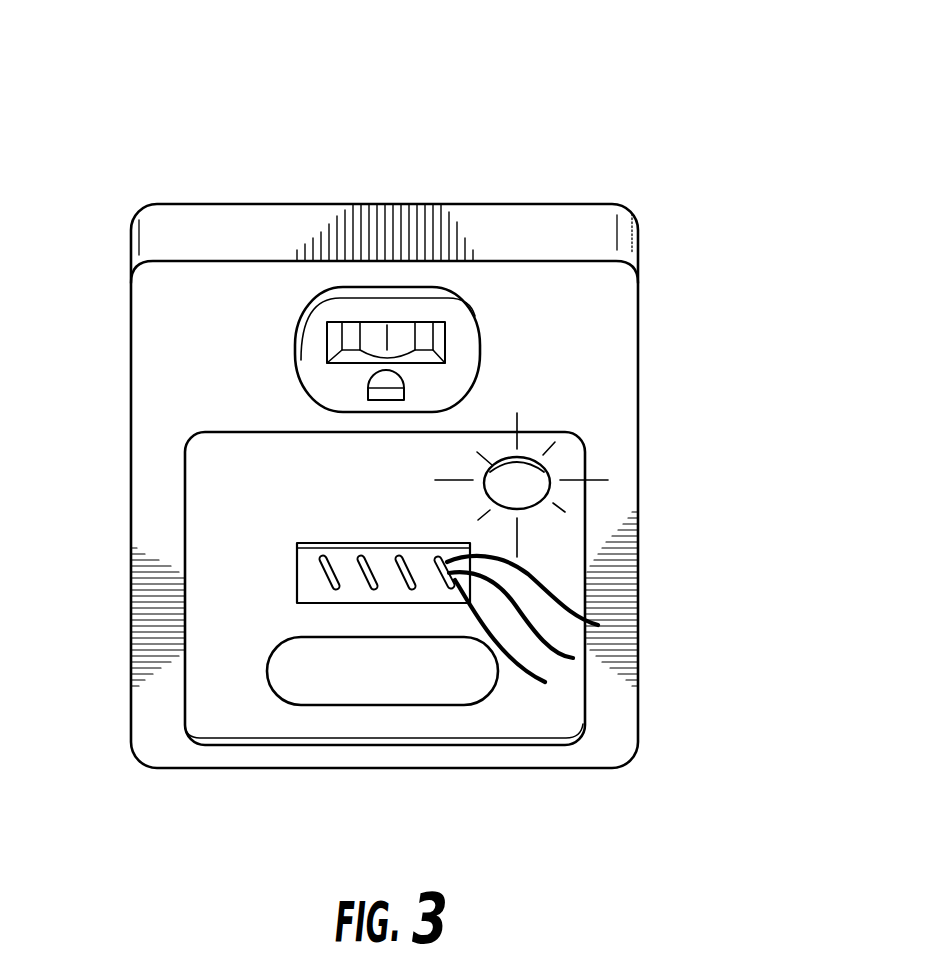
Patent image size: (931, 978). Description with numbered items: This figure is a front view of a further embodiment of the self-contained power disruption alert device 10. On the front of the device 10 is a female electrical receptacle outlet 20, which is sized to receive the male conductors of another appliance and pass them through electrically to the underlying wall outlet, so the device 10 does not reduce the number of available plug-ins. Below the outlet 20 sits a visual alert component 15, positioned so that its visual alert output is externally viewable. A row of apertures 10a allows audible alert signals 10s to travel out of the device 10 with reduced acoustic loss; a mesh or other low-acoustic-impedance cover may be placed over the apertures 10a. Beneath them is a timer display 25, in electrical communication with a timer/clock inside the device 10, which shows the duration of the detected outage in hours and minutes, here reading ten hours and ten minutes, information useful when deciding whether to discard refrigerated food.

The power disruption alert device 10 is at (467, 92).
The apertures 10a is at (400, 556).
The audible alert signals 10s is at (563, 605).
The visual alert component 15 is at (532, 485).
The female electrical receptacle outlet 20 is at (463, 356).
The timer display 25 is at (452, 683).